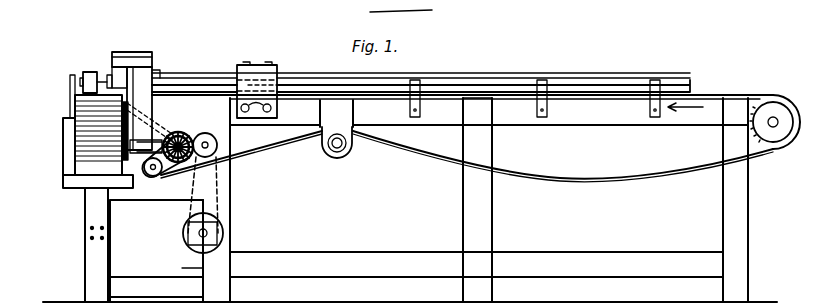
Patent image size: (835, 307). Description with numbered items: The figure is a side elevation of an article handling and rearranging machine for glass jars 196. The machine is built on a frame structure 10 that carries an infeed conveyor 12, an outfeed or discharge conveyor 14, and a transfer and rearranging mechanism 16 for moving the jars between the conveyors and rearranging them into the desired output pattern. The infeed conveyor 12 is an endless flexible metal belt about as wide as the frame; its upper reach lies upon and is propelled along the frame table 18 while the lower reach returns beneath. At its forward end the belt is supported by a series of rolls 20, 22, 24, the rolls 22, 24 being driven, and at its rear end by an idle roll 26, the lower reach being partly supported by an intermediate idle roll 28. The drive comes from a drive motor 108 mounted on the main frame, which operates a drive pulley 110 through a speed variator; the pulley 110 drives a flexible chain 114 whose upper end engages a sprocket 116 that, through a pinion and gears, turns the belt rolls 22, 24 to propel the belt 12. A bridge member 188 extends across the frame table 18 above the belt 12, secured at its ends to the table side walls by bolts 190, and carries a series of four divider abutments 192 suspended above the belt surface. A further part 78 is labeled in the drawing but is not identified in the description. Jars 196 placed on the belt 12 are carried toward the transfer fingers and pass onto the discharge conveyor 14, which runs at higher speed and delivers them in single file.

The frame structure 10 is at (475, 212).
The infeed conveyor 12 is at (593, 100).
The discharge conveyor 14 is at (85, 143).
The transfer and rearranging mechanism 16 is at (171, 68).
The frame table 18 is at (510, 113).
The roll 20 is at (140, 105).
The roll 22 is at (177, 177).
The roll 24 is at (152, 178).
The idle roll 26 is at (775, 138).
The intermediate idle roll 28 is at (335, 152).
The feed bar 78 is at (575, 82).
The drive motor 108 is at (185, 258).
The drive pulley 110 is at (213, 236).
The flexible chain 114 is at (222, 192).
The sprocket 116 is at (217, 144).
The bridge member 188 is at (253, 70).
The bolts 190 is at (275, 107).
The divider abutments 192 is at (278, 85).
The glass jars 196 is at (90, 72).